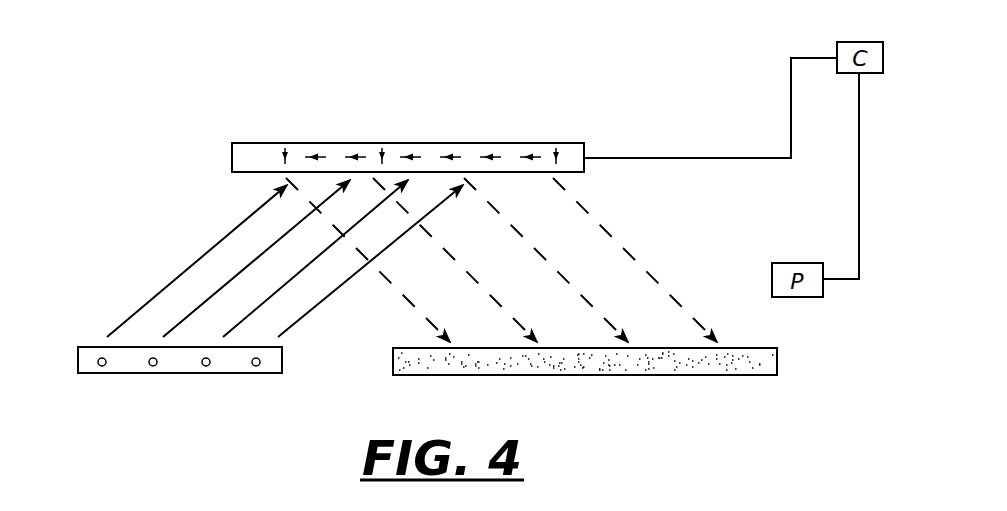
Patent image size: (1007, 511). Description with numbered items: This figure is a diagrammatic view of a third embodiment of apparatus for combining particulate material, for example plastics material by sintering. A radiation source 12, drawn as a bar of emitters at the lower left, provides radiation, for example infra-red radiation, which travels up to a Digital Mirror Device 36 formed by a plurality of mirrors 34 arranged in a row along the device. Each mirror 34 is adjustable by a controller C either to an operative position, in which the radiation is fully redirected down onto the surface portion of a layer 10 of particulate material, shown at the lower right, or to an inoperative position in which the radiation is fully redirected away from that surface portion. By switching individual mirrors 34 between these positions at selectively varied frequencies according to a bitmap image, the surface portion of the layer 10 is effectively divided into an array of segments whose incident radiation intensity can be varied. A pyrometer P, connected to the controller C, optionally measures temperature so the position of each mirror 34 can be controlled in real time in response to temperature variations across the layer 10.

The layer of particulate material 10 is at (687, 365).
The radiation source 12 is at (225, 363).
The mirrors 34 is at (308, 148).
The Digital Mirror Device 36 is at (352, 143).